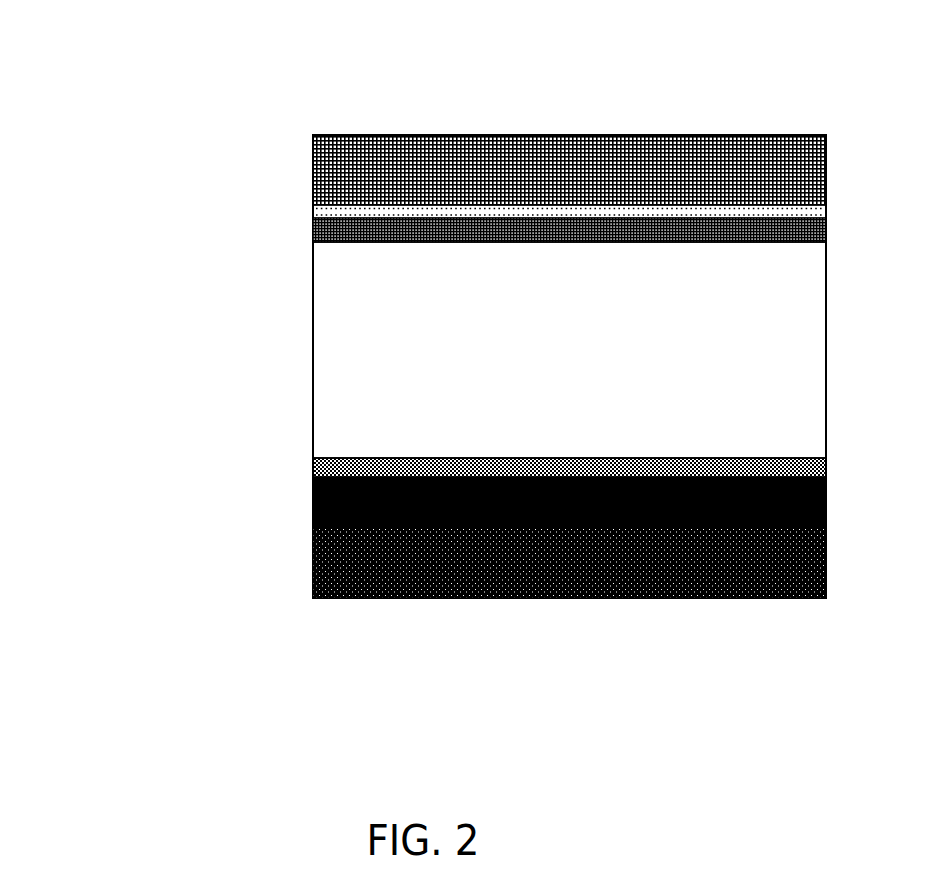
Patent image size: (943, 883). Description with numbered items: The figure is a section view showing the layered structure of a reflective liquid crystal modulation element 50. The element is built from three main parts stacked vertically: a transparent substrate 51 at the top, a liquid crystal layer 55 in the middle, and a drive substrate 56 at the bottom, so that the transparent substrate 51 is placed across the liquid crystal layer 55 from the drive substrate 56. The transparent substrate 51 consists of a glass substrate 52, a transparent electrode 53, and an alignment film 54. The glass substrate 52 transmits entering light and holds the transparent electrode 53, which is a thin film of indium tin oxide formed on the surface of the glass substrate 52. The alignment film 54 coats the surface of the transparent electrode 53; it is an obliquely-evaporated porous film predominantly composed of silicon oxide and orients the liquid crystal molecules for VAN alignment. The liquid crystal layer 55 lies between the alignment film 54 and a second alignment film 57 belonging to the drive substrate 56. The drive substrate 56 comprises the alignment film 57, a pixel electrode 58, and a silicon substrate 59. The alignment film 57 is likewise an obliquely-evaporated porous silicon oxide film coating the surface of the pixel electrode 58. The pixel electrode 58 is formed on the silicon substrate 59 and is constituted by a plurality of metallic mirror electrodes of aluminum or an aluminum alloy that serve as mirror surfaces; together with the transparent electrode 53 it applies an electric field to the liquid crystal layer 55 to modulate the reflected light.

The liquid crystal modulation element 50 is at (569, 301).
The transparent substrate 51 is at (112, 115).
The glass substrate 52 is at (330, 168).
The transparent electrode 53 is at (330, 217).
The alignment film 54 is at (318, 236).
The liquid crystal layer 55 is at (330, 348).
The drive substrate 56 is at (112, 457).
The alignment film 57 is at (313, 470).
The pixel electrode 58 is at (313, 517).
The silicon substrate 59 is at (313, 578).